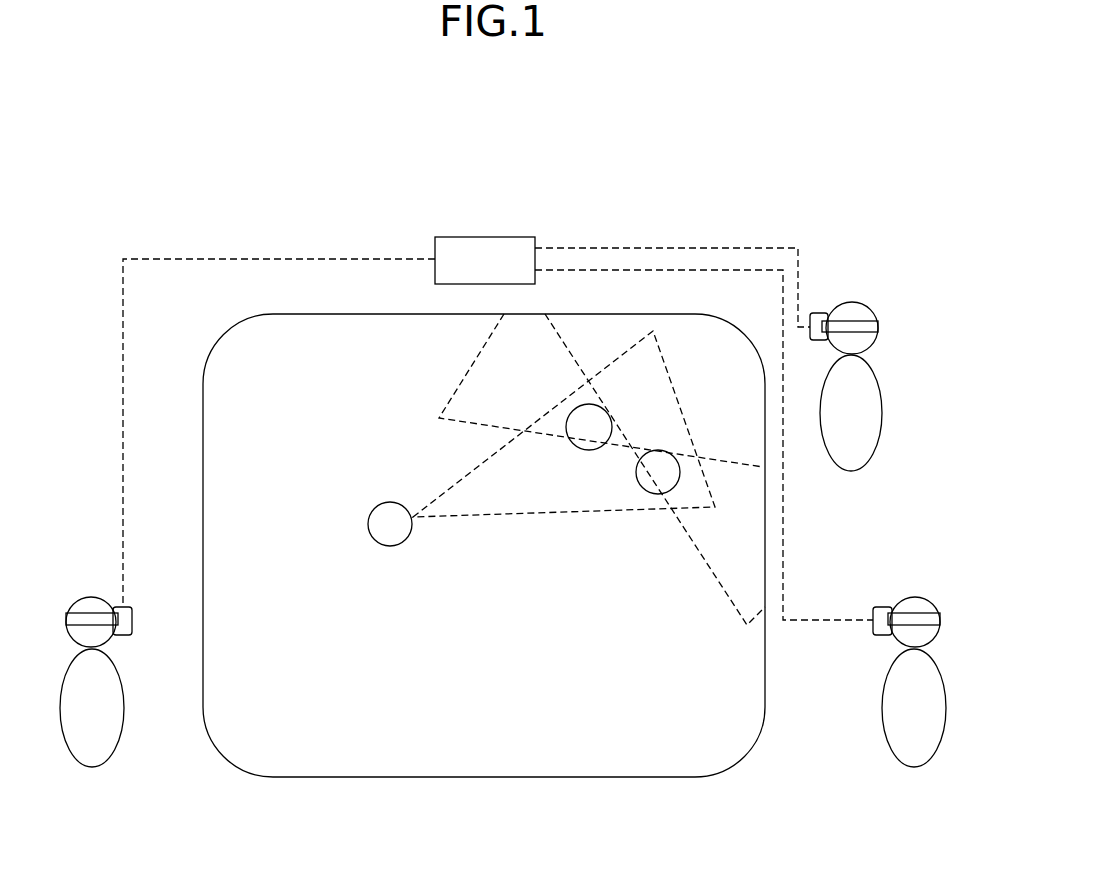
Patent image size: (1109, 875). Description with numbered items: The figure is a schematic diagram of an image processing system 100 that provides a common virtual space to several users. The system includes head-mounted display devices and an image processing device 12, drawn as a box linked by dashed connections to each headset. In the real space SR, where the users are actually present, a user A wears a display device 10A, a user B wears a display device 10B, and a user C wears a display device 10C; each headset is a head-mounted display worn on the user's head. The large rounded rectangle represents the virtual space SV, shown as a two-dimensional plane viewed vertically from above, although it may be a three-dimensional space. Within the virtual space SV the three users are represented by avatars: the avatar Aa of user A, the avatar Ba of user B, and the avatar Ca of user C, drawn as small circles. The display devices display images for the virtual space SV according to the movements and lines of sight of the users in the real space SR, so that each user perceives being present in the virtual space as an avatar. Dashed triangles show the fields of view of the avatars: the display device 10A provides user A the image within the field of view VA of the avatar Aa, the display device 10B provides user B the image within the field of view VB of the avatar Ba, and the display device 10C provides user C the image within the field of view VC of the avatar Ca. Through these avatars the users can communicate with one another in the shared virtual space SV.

The image processing system 100 is at (782, 124).
The image processing device 12 is at (513, 210).
The display device 10A is at (822, 305).
The display device 10B is at (138, 640).
The display device 10C is at (870, 638).
The user A is at (857, 334).
The user B is at (129, 658).
The user C is at (868, 653).
The field of view VA is at (732, 458).
The field of view VB is at (487, 515).
The field of view VC is at (449, 397).
The avatar Aa is at (565, 450).
The avatar Ba is at (372, 556).
The avatar Ca is at (672, 497).
The virtual space SV is at (503, 763).
The real space SR is at (748, 841).